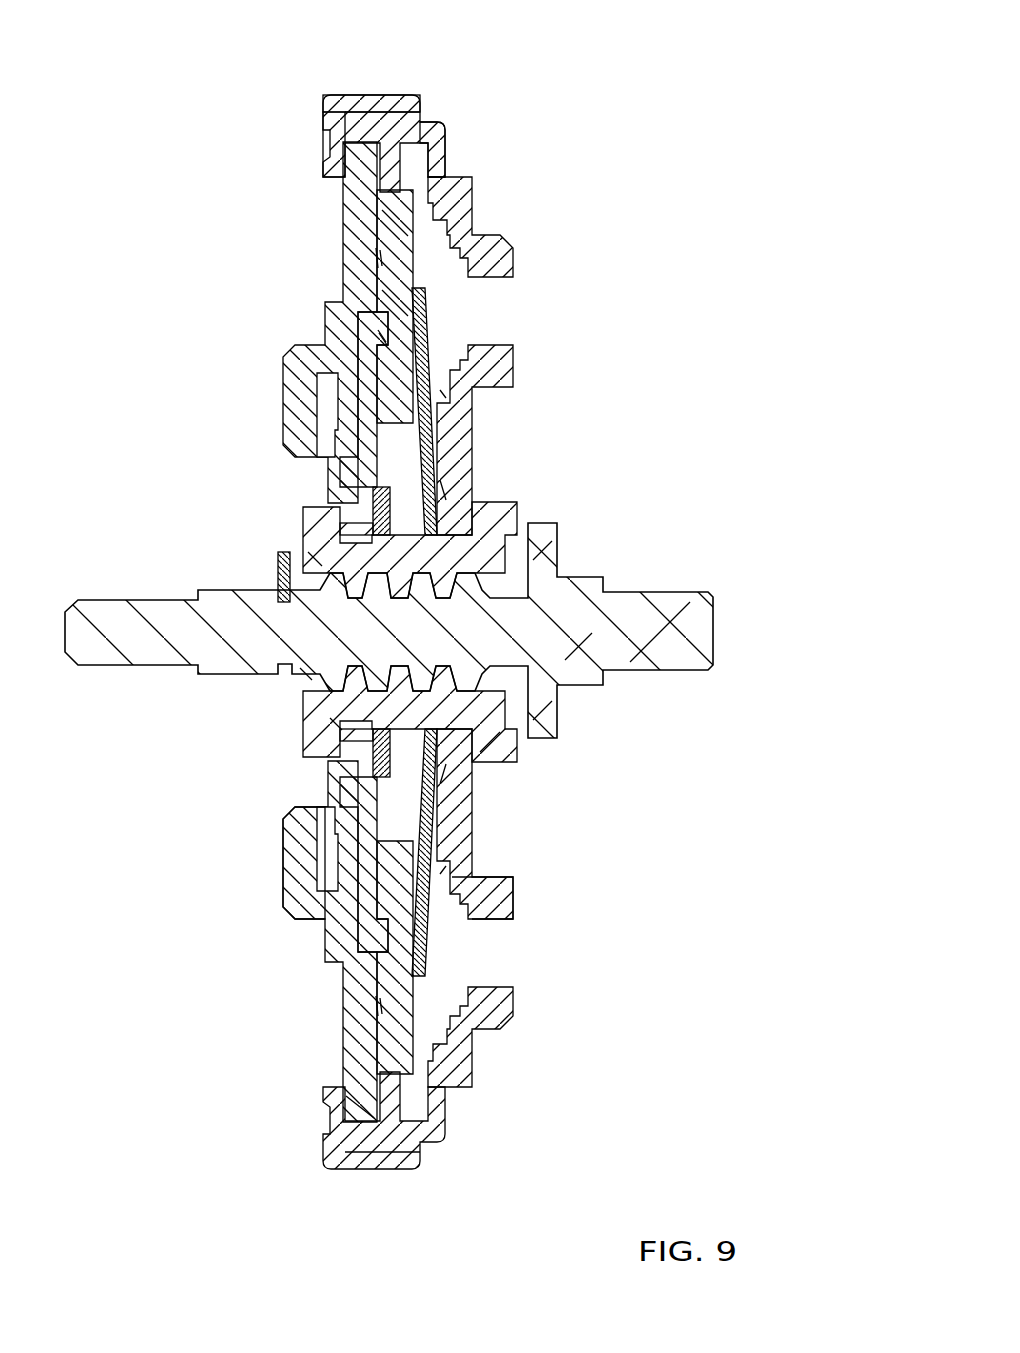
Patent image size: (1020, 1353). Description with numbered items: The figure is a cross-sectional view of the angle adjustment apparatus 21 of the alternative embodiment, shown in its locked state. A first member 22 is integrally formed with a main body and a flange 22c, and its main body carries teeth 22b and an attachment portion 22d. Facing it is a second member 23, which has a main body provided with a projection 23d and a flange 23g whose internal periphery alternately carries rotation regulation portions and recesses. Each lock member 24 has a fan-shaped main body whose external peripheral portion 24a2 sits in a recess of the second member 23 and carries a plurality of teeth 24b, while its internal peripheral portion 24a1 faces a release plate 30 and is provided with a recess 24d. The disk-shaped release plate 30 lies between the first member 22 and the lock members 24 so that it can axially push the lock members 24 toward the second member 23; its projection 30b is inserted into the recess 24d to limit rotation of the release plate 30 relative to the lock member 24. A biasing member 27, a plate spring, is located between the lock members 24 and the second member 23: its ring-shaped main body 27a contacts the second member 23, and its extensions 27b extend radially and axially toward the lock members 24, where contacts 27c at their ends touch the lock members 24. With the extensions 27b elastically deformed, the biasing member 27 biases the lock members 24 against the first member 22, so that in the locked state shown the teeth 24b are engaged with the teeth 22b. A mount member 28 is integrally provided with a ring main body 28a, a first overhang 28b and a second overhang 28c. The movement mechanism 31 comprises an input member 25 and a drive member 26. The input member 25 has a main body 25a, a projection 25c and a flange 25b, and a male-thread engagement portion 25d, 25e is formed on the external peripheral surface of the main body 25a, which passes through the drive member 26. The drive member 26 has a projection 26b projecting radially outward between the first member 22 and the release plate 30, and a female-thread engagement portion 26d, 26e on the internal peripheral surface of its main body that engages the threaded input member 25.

The angle adjustment apparatus 21 is at (436, 624).
The first member 22 is at (285, 632).
The teeth 22b is at (372, 258).
The flange 22c is at (367, 1100).
The attachment portion 22d is at (302, 870).
The second member 23 is at (464, 710).
The projection 23d is at (497, 906).
The flange 23g is at (378, 1133).
The lock member 24 is at (374, 632).
The internal peripheral portion 24a1 is at (390, 300).
The external peripheral portion 24a2 is at (400, 222).
The teeth 24b is at (318, 638).
The recess 24d is at (267, 358).
The input member 25 is at (436, 625).
The main body 25a is at (553, 647).
The flange 25b is at (543, 538).
The projection 25c is at (688, 628).
The engagement portion 25d is at (318, 678).
The engagement portion 25e is at (340, 724).
The drive member 26 is at (375, 617).
The projection 26b is at (485, 738).
The engagement portion 26d is at (378, 520).
The engagement portion 26e is at (312, 552).
The biasing member 27 is at (401, 632).
The main body 27a is at (426, 468).
The extension 27b is at (433, 377).
The contact 27c is at (422, 303).
The mount member 28 is at (395, 98).
The ring main body 28a is at (352, 105).
The first overhang 28b is at (333, 128).
The second overhang 28c is at (437, 152).
The release plate 30 is at (292, 632).
The projection 30b is at (295, 357).
The movement mechanism 31 is at (436, 617).